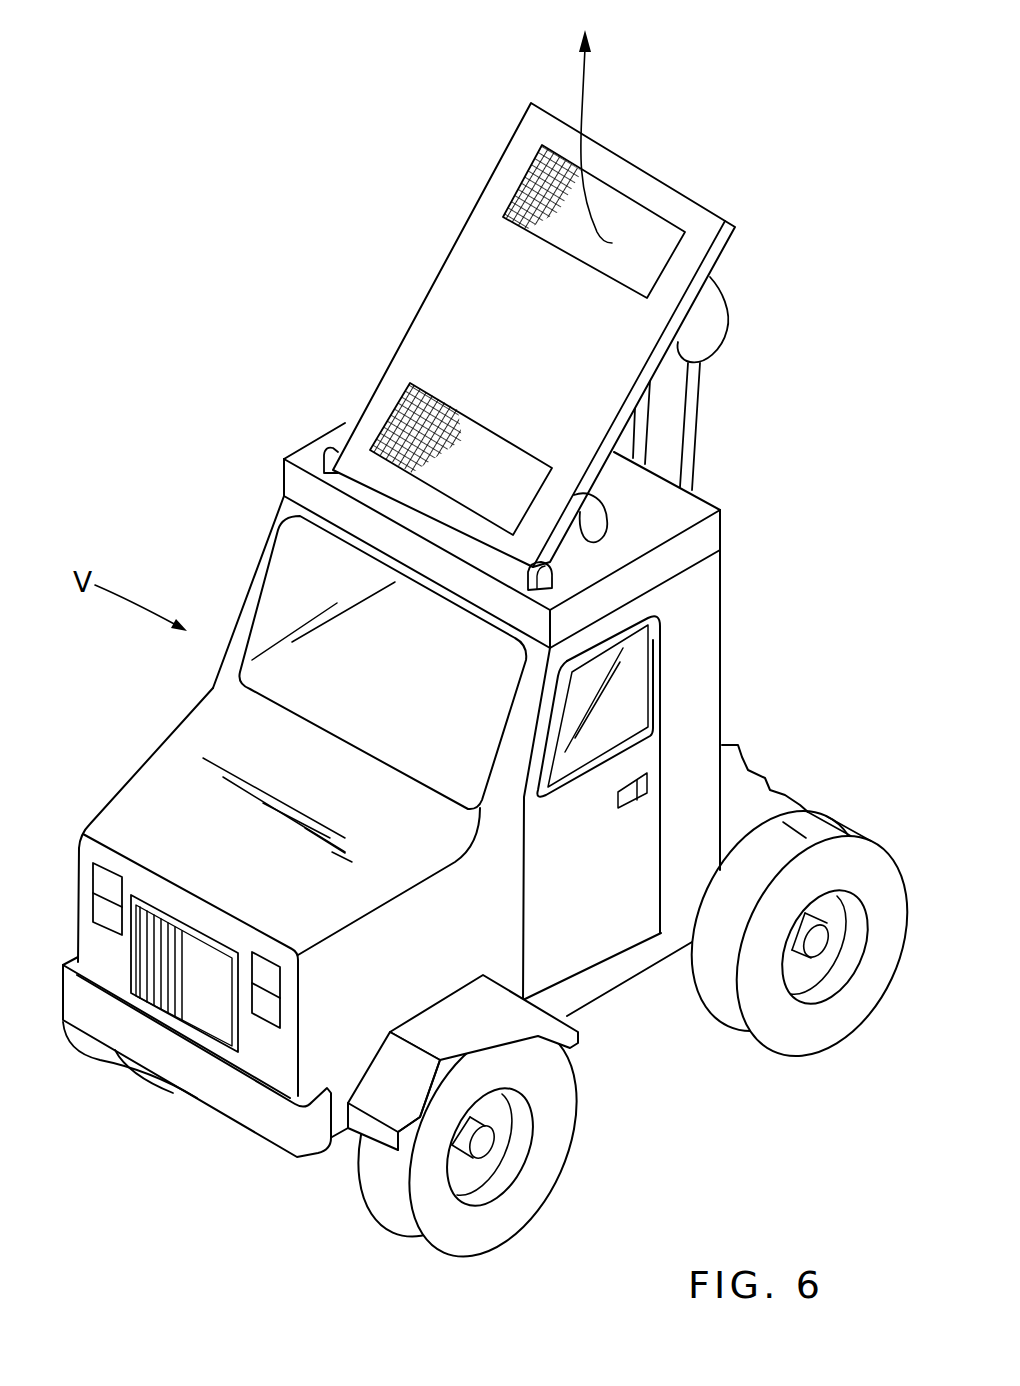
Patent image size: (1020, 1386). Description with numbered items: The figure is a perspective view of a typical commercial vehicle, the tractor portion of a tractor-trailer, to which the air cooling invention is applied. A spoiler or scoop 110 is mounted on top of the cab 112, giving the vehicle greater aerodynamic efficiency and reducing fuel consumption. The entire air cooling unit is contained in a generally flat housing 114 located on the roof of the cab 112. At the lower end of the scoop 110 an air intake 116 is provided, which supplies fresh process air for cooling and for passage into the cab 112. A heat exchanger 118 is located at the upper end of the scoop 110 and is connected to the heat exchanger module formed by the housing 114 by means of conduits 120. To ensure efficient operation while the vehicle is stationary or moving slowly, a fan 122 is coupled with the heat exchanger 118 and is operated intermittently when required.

The spoiler or scoop 110 is at (488, 310).
The cab 112 is at (687, 626).
The generally flat housing 114 is at (295, 481).
The air intake 116 is at (375, 412).
The heat exchanger 118 is at (528, 177).
The conduits 120 is at (645, 452).
The fan 122 is at (723, 317).